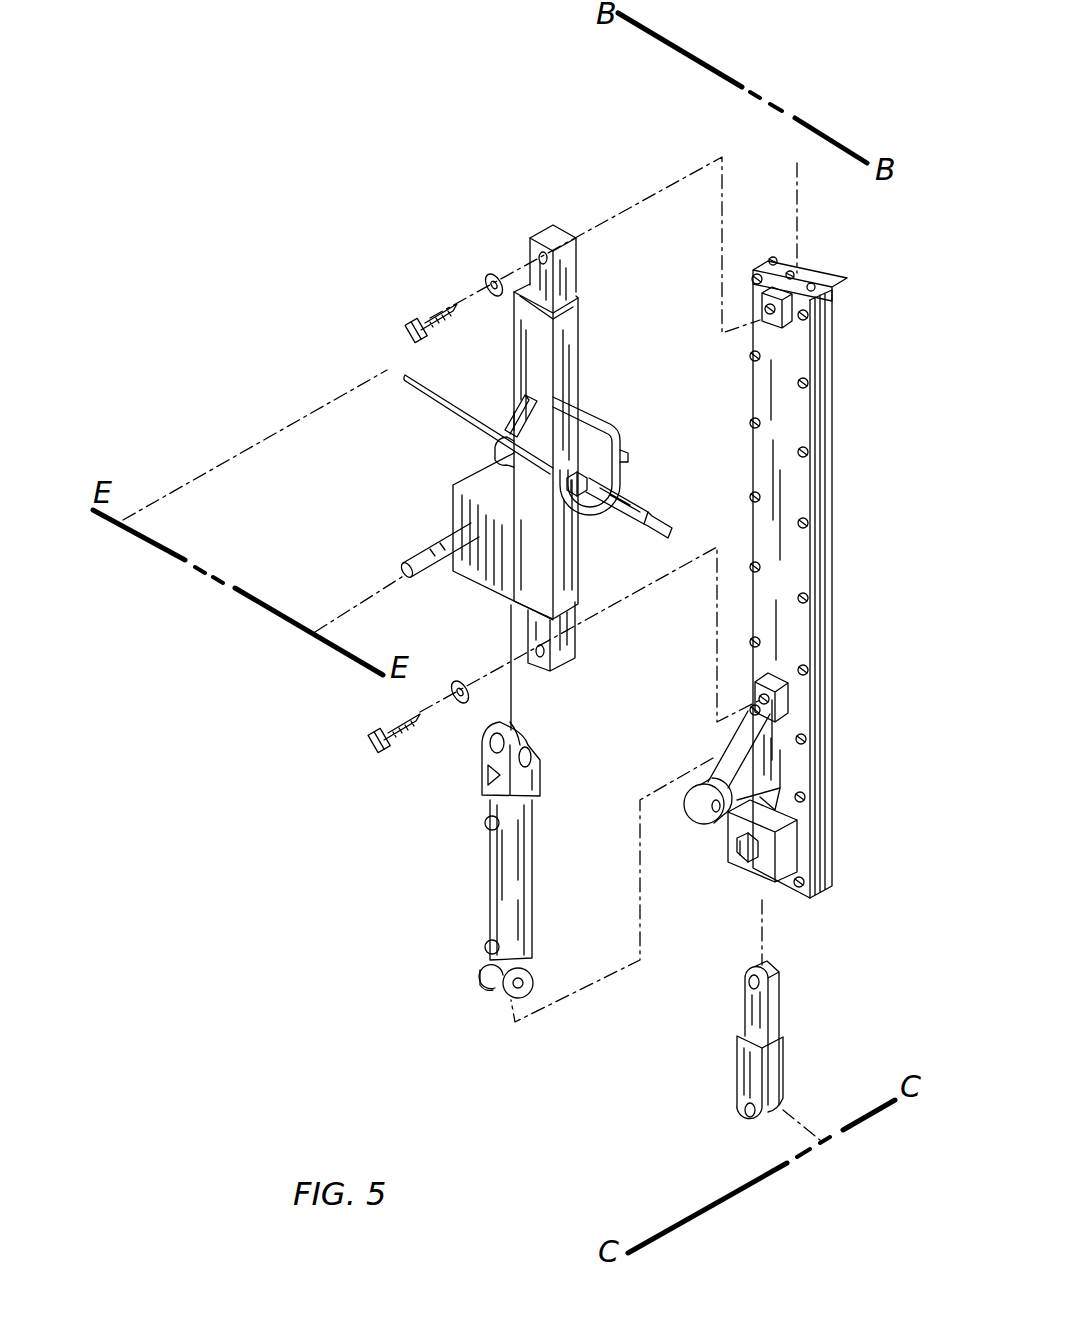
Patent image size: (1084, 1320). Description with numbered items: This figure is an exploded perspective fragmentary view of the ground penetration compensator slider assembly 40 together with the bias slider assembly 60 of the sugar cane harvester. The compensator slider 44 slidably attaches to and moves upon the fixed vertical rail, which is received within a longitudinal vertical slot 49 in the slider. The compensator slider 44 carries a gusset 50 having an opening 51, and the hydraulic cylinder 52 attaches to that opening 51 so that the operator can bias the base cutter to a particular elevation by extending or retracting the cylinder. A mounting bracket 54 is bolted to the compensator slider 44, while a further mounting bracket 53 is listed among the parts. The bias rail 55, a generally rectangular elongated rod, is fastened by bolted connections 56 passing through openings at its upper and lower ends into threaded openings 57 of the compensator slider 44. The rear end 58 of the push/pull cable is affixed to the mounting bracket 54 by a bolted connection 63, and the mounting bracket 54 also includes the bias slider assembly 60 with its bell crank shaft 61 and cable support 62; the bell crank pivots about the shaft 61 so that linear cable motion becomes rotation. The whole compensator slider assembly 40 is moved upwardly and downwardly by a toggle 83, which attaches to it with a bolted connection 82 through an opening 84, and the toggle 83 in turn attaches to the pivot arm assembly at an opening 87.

The compensator slider assembly 40 is at (482, 190).
The compensator slider 44 is at (803, 488).
The slot 49 is at (803, 274).
The gusset 50 is at (770, 752).
The opening 51 is at (716, 826).
The hydraulic cylinder 52 is at (510, 881).
The mounting bracket 53 is at (512, 415).
The mounting bracket 54 is at (485, 571).
The bias rail 55 is at (580, 263).
The bolted connection 56 is at (404, 320).
The threaded openings 57 is at (765, 310).
The rear end of push/pull cable 58 is at (626, 486).
The bias slider assembly 60 is at (453, 520).
The bell crank shaft 61 is at (405, 565).
The cable support 62 is at (604, 425).
The bolted connection 63 is at (580, 512).
The bolted connection 82 is at (745, 868).
The toggle 83 is at (783, 1052).
The opening 84 is at (745, 985).
The opening 87 is at (748, 1113).